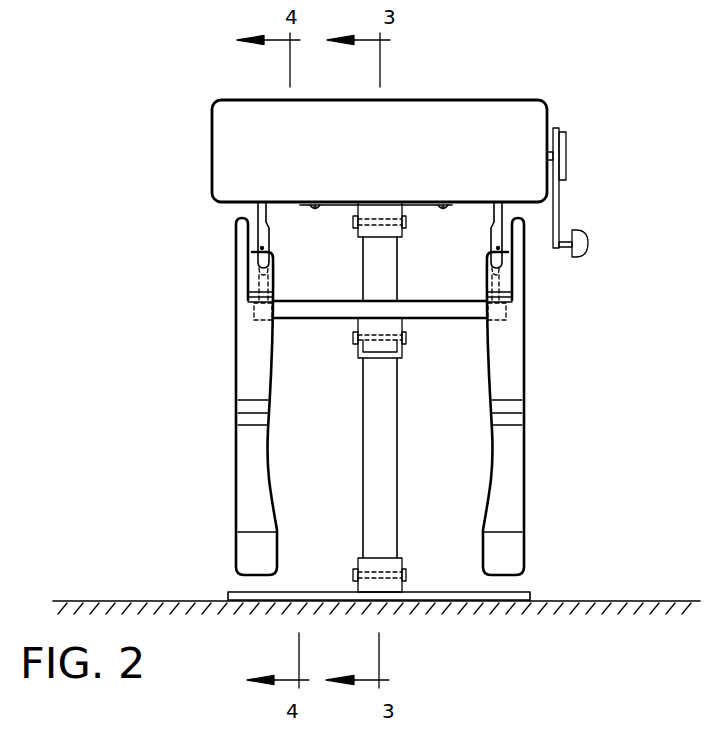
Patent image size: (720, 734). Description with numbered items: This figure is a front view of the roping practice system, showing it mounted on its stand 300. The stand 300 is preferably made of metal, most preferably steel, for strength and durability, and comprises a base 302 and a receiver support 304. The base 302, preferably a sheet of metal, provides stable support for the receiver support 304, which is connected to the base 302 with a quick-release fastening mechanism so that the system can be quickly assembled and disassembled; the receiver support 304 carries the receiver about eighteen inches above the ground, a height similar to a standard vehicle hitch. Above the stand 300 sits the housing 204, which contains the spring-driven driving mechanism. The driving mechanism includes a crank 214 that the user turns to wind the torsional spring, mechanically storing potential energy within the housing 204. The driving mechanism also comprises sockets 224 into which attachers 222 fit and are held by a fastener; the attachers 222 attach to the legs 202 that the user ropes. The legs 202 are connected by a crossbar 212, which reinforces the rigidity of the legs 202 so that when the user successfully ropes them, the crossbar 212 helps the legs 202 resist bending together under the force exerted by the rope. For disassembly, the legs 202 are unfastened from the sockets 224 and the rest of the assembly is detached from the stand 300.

The legs 202 is at (522, 344).
The housing 204 is at (500, 100).
The crossbar 212 is at (427, 320).
The crank 214 is at (566, 158).
The attachers 222 is at (276, 285).
The sockets 224 is at (255, 210).
The stand 300 is at (411, 401).
The base 302 is at (530, 592).
The receiver support 304 is at (397, 478).